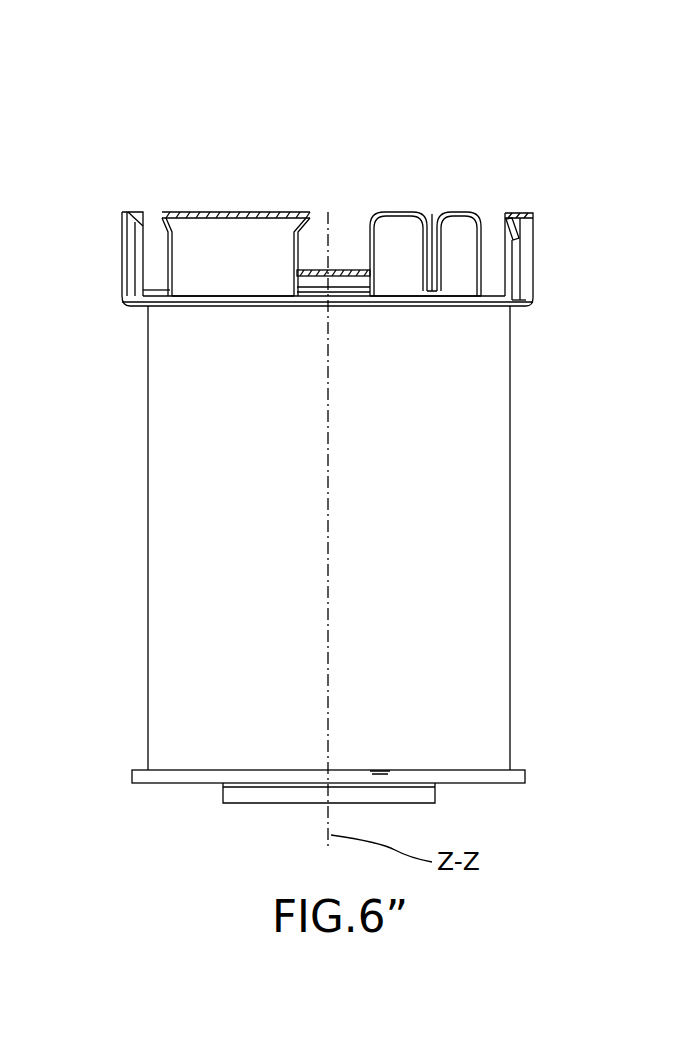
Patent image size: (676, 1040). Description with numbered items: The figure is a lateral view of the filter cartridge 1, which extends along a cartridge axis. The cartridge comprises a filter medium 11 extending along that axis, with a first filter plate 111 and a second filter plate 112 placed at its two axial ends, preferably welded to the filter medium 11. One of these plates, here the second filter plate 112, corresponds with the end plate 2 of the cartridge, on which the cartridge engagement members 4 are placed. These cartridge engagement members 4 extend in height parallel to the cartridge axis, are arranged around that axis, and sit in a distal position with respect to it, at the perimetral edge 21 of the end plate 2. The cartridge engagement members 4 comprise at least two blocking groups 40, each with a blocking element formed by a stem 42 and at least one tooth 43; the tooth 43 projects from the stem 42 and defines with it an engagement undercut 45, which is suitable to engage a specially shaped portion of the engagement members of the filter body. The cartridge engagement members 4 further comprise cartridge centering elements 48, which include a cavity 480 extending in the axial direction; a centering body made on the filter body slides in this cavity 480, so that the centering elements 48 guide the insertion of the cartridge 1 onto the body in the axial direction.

The filter cartridge 1 is at (390, 568).
The filter medium 11 is at (485, 564).
The first filter plate 111 is at (530, 778).
The end plate 2 is at (393, 322).
The second filter plate 112 is at (537, 304).
The cartridge engagement members 4 is at (332, 207).
The blocking group 40 is at (212, 177).
The stem 42 is at (185, 260).
The tooth 43 is at (158, 233).
The engagement undercut 45 is at (118, 212).
The cartridge centering elements 48 is at (465, 200).
The cavity 480 is at (429, 214).
The perimetral edge 21 is at (160, 298).